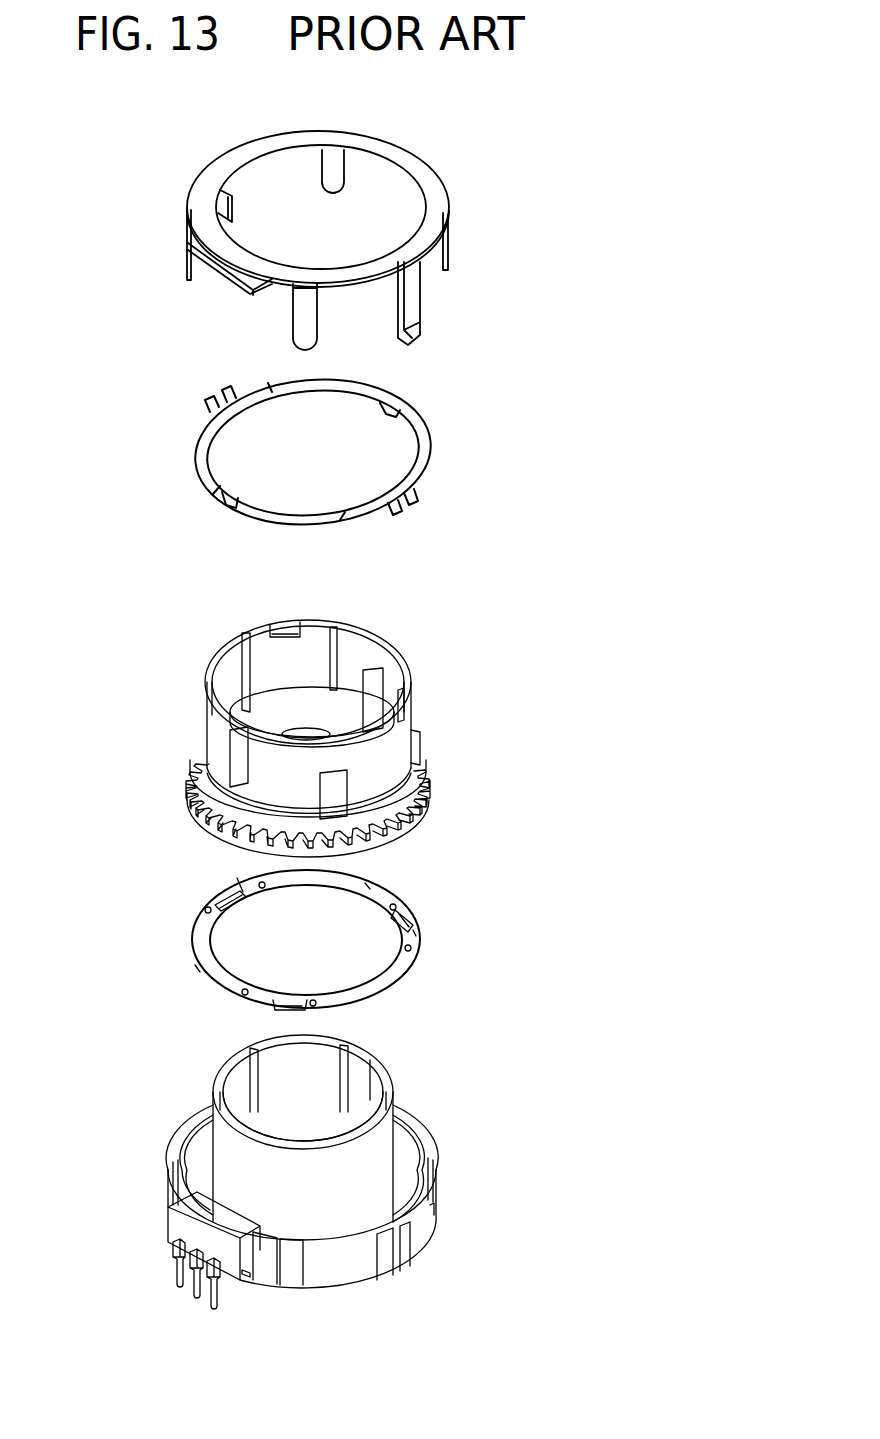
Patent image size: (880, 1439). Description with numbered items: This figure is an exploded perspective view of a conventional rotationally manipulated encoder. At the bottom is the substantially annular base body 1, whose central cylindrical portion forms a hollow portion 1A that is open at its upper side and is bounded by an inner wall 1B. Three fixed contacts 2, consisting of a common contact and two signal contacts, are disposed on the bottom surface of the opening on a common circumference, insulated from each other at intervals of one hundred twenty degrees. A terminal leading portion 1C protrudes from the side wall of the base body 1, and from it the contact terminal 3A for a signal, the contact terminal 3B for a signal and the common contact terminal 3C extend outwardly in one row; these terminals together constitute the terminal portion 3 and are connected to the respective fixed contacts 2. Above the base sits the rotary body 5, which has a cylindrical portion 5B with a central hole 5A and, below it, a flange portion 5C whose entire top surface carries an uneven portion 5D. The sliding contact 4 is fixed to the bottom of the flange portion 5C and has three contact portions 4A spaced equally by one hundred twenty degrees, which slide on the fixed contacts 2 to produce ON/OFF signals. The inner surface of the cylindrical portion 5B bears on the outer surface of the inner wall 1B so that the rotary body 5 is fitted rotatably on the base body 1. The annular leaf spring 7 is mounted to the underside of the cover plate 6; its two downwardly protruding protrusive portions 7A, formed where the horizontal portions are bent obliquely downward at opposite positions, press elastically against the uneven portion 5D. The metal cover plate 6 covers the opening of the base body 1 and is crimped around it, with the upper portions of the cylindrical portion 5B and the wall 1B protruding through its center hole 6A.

The base body 1 is at (280, 1186).
The hollow portion 1A is at (313, 1110).
The inner wall 1B is at (371, 1128).
The terminal leading portion 1C is at (183, 1223).
The fixed contacts 2 is at (202, 1182).
The terminal portion 3 is at (125, 1284).
The contact terminal for a signal 3A is at (173, 1280).
The contact terminal for a signal 3B is at (193, 1293).
The common contact terminal 3C is at (207, 1300).
The sliding contact 4 is at (357, 940).
The contact portions 4A is at (411, 922).
The rotary body 5 is at (339, 732).
The central hole 5A is at (302, 710).
The cylindrical portion 5B is at (311, 719).
The flange portion 5C is at (355, 825).
The uneven portion 5D is at (420, 785).
The cover plate 6 is at (365, 240).
The center hole 6A is at (357, 208).
The annular leaf spring 7 is at (321, 458).
The protrusive portions 7A is at (398, 413).